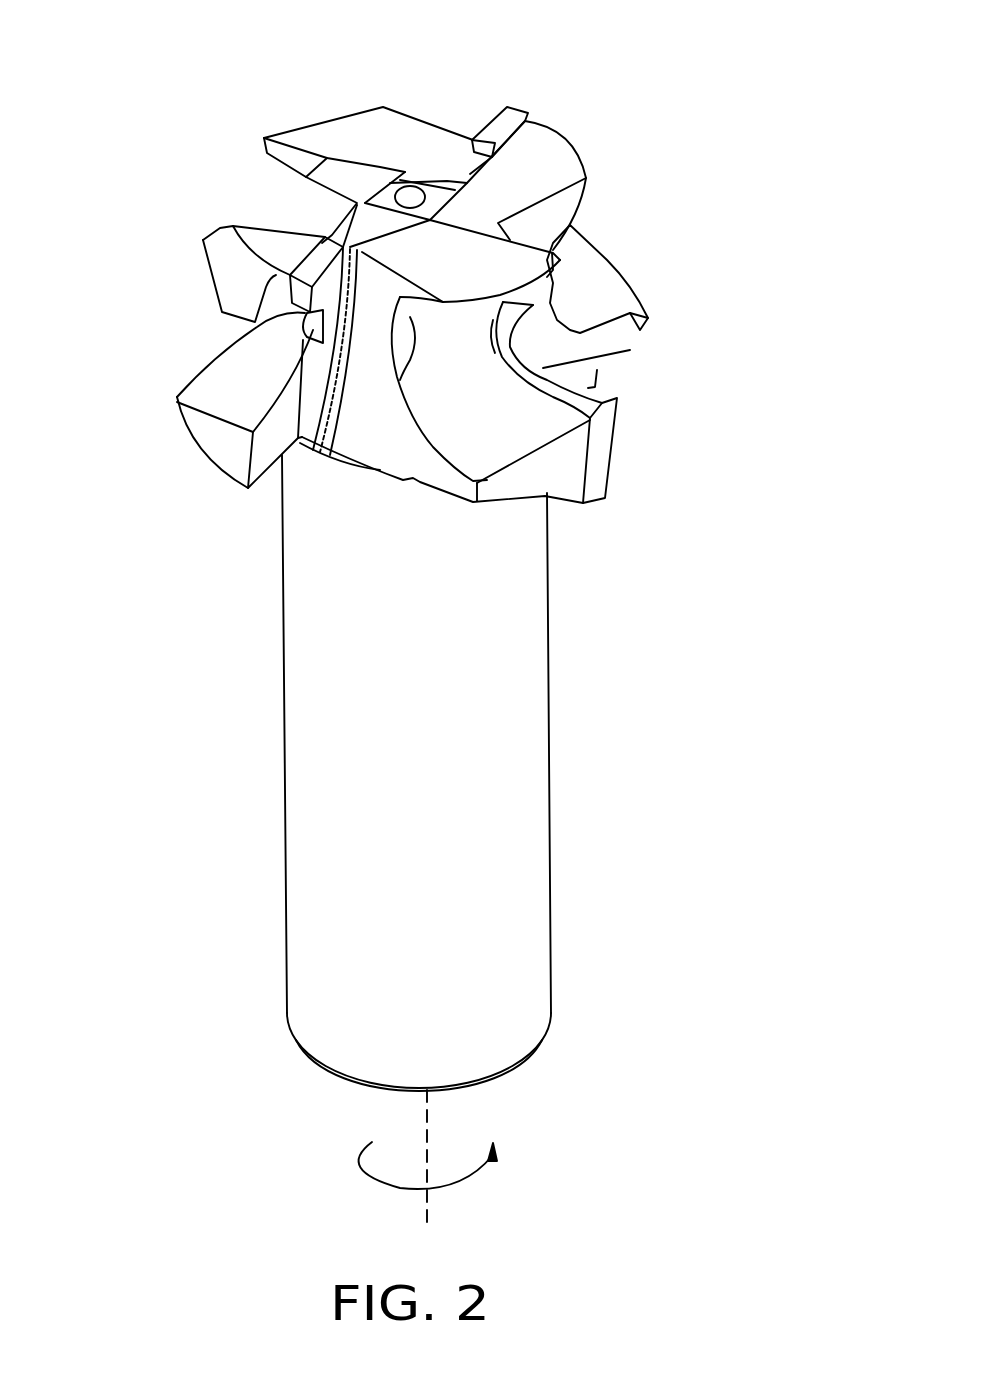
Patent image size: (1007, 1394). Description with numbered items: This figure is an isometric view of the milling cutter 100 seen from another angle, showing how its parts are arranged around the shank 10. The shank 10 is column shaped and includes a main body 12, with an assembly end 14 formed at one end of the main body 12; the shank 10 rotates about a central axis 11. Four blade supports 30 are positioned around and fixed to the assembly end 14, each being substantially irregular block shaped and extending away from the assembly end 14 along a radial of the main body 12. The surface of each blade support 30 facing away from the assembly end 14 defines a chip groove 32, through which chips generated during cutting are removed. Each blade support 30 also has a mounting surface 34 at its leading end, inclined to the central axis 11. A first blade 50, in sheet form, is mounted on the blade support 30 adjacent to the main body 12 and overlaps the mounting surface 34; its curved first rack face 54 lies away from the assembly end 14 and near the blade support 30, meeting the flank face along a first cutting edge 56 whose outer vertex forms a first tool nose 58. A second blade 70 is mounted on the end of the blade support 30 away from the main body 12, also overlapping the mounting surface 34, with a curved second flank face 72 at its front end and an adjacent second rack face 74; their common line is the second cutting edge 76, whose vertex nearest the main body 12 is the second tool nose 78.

The milling cutter 100 is at (432, 27).
The shank 10 is at (515, 1070).
The central axis 11 is at (428, 1163).
The main body 12 is at (507, 704).
The assembly end 14 is at (393, 183).
The blade support 30 is at (549, 166).
The chip groove 32 is at (588, 274).
The mounting surface 34 is at (260, 453).
The first blade 50 is at (614, 441).
The first rack face 54 is at (613, 396).
The first cutting edge 56 is at (624, 346).
The first tool nose 58 is at (535, 305).
The second blade 70 is at (319, 259).
The second flank face 72 is at (322, 292).
The second rack face 74 is at (310, 333).
The second cutting edge 76 is at (306, 330).
The second tool nose 78 is at (188, 412).